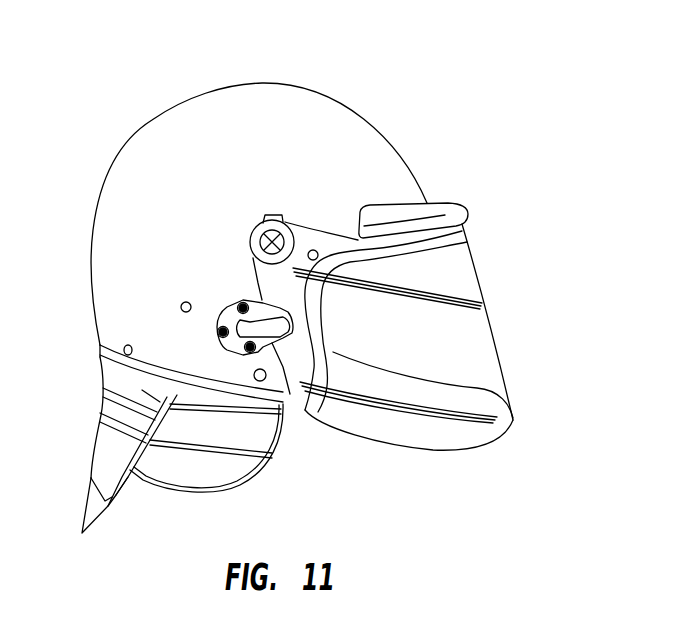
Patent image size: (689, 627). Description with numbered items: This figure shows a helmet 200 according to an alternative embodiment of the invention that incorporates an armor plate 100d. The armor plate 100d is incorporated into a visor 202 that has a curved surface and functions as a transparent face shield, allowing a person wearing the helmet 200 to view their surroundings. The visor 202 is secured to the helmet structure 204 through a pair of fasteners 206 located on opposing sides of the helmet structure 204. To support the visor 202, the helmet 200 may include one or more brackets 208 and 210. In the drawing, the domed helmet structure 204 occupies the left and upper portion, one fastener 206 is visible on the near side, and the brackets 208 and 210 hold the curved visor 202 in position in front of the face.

The helmet 200 is at (388, 98).
The visor 202 is at (482, 287).
The helmet structure 204 is at (153, 133).
The fastener 206 is at (260, 236).
The bracket 208 is at (272, 347).
The bracket 210 is at (450, 208).
The armor plate 100d is at (502, 362).